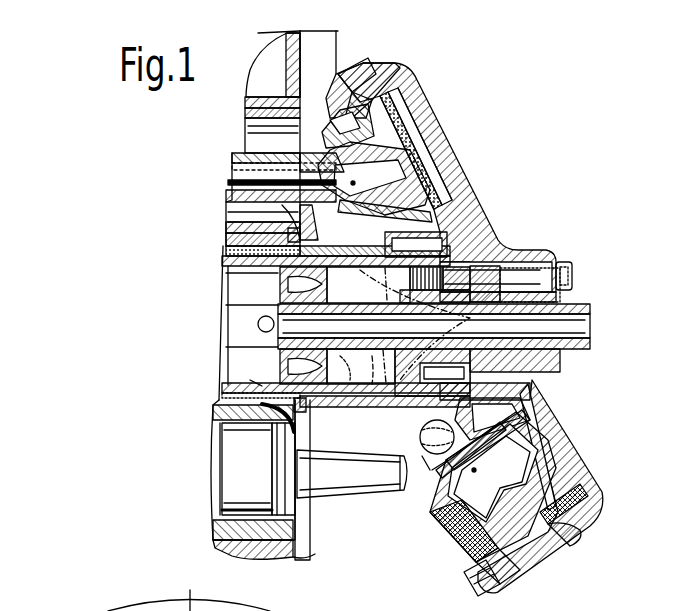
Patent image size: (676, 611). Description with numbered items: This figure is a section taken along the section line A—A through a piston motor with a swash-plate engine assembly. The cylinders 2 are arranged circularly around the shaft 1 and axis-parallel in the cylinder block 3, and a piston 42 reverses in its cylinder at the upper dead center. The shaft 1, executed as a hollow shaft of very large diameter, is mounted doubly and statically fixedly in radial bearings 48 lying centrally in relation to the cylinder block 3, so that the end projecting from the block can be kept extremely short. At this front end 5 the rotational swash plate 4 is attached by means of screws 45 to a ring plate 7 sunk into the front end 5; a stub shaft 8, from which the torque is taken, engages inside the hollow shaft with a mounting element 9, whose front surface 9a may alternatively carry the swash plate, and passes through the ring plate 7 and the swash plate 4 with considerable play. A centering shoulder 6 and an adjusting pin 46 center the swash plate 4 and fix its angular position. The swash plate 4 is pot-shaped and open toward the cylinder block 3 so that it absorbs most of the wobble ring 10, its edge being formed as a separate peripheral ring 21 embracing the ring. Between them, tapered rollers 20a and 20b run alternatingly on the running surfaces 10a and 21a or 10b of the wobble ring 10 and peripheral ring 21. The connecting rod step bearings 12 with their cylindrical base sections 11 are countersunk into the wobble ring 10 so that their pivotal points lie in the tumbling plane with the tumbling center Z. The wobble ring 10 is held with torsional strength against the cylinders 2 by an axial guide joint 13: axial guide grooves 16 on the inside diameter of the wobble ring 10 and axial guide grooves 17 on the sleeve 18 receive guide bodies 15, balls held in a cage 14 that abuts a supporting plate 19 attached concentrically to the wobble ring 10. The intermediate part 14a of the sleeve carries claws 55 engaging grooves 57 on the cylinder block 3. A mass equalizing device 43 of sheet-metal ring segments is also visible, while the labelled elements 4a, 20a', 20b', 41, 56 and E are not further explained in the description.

The shaft 1 is at (232, 275).
The cylinders 2 is at (272, 135).
The cylinder block 3 is at (266, 96).
The rotational swash plate 4 is at (470, 198).
The housing ledge 4a is at (512, 250).
The front end 5 is at (485, 411).
The centering shoulder 6 is at (462, 362).
The ring plate 7 is at (386, 382).
The stub shaft 8 is at (578, 343).
The mounting element 9 is at (280, 364).
The front surface 9a is at (278, 294).
The wobble ring 10 is at (470, 520).
The running surface 10a is at (332, 140).
The running surface 10b is at (480, 496).
The base sections 11 is at (418, 144).
The connecting rod step bearings 12 is at (355, 184).
The axial guide joint 13 is at (402, 438).
The cage 14 is at (424, 446).
The intermediate part of the sleeve 14a is at (336, 246).
The guide bodies 15 is at (440, 468).
The axial guide grooves 16 is at (324, 230).
The axial guide grooves 17 is at (390, 428).
The sleeve 18 is at (366, 379).
The supporting plate 19 is at (552, 470).
The rollers 20a is at (365, 61).
The upper seal ring 20a' is at (335, 96).
The rollers 20b is at (455, 531).
The lower seal ring 20b' is at (564, 534).
The peripheral ring 21 is at (342, 78).
The running surface 21a is at (486, 558).
The lower housing wall 41 is at (214, 458).
The piston 42 is at (247, 469).
The mass equalizing device 43 is at (476, 578).
The screws 45 is at (535, 290).
The adjusting pin 46 is at (520, 364).
The radial bearings 48 is at (258, 384).
The claws 55 is at (290, 241).
The shaft bore 56 is at (376, 326).
The grooves 57 is at (286, 432).
The section line A— A is at (446, 363).
The pump inlet E is at (452, 492).
The tumbling center Z is at (386, 294).